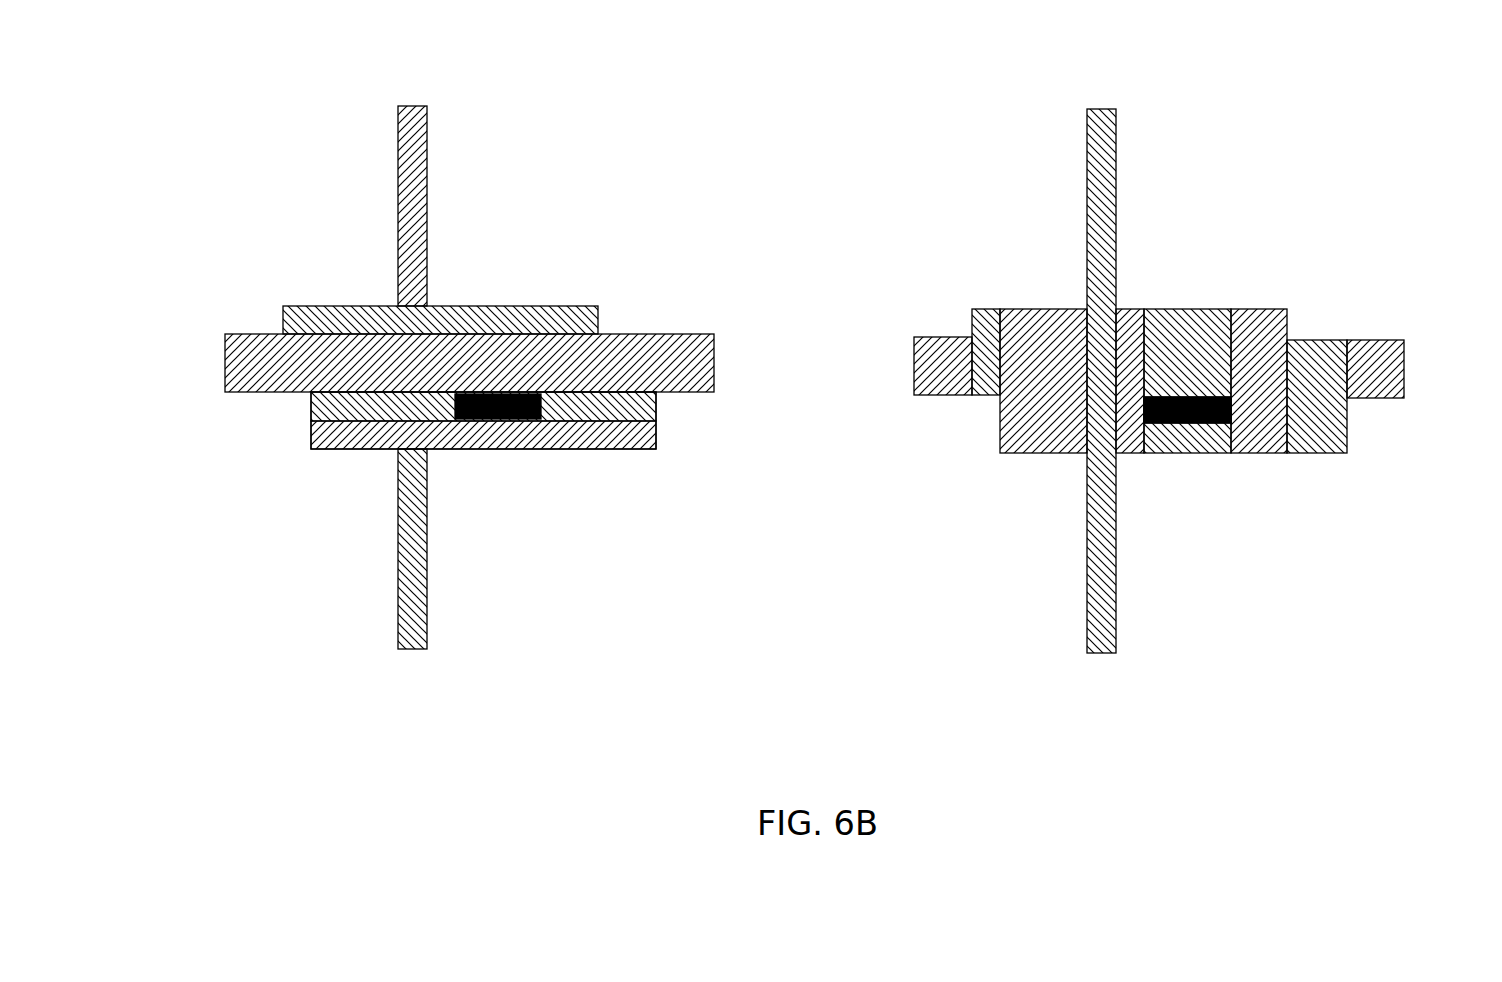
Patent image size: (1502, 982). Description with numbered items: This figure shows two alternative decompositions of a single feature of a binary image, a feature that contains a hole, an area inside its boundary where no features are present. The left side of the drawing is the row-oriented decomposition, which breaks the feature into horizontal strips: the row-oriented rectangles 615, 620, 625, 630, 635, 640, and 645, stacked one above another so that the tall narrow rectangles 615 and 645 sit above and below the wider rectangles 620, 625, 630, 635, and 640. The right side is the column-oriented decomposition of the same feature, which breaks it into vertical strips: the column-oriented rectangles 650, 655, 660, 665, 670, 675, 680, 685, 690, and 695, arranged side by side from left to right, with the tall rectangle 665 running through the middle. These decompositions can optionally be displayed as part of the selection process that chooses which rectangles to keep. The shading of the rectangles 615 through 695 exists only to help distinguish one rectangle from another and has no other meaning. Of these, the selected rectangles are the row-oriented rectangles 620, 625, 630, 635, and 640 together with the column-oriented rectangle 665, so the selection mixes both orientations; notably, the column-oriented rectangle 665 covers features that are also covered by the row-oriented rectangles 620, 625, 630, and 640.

The row-oriented rectangle 615 is at (398, 141).
The row-oriented rectangle 620 is at (372, 306).
The row-oriented rectangle 625 is at (225, 356).
The row-oriented rectangle 630 is at (311, 403).
The row-oriented rectangle 635 is at (656, 414).
The row-oriented rectangle 640 is at (375, 450).
The row-oriented rectangle 645 is at (398, 580).
The column-oriented rectangle 650 is at (914, 359).
The column-oriented rectangle 655 is at (985, 309).
The column-oriented rectangle 660 is at (1057, 453).
The column-oriented rectangle 665 is at (1087, 149).
The column-oriented rectangle 670 is at (1128, 309).
The column-oriented rectangle 675 is at (1160, 309).
The column-oriented rectangle 680 is at (1170, 453).
The column-oriented rectangle 685 is at (1262, 309).
The column-oriented rectangle 690 is at (1318, 340).
The column-oriented rectangle 695 is at (1404, 362).